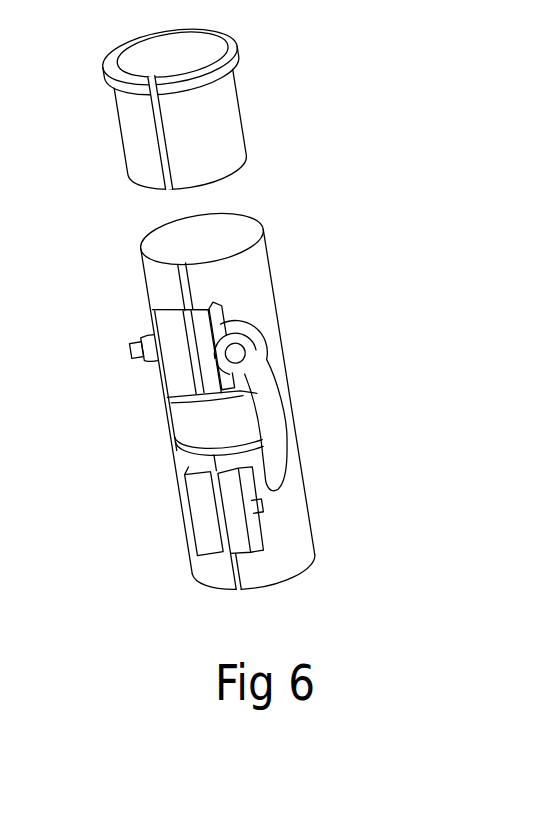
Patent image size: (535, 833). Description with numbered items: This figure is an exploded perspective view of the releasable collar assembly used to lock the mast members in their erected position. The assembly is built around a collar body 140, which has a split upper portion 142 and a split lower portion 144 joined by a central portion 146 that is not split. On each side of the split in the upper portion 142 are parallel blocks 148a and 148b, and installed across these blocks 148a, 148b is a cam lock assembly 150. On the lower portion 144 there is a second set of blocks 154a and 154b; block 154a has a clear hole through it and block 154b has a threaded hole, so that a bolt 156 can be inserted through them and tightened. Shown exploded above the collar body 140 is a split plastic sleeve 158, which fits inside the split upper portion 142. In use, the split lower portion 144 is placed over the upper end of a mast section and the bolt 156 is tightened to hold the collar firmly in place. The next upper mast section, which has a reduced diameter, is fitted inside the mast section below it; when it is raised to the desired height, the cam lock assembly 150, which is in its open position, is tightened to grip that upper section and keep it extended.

The split plastic sleeve 158 is at (238, 86).
The collar body 140 is at (272, 262).
The split upper portion 142 is at (143, 270).
The split lower portion 144 is at (315, 513).
The central portion 146 is at (167, 418).
The block 148a is at (222, 304).
The block 148b is at (163, 303).
The cam lock assembly 150 is at (277, 340).
The block 154a is at (257, 552).
The block 154b is at (188, 522).
The bolt 156 is at (262, 517).